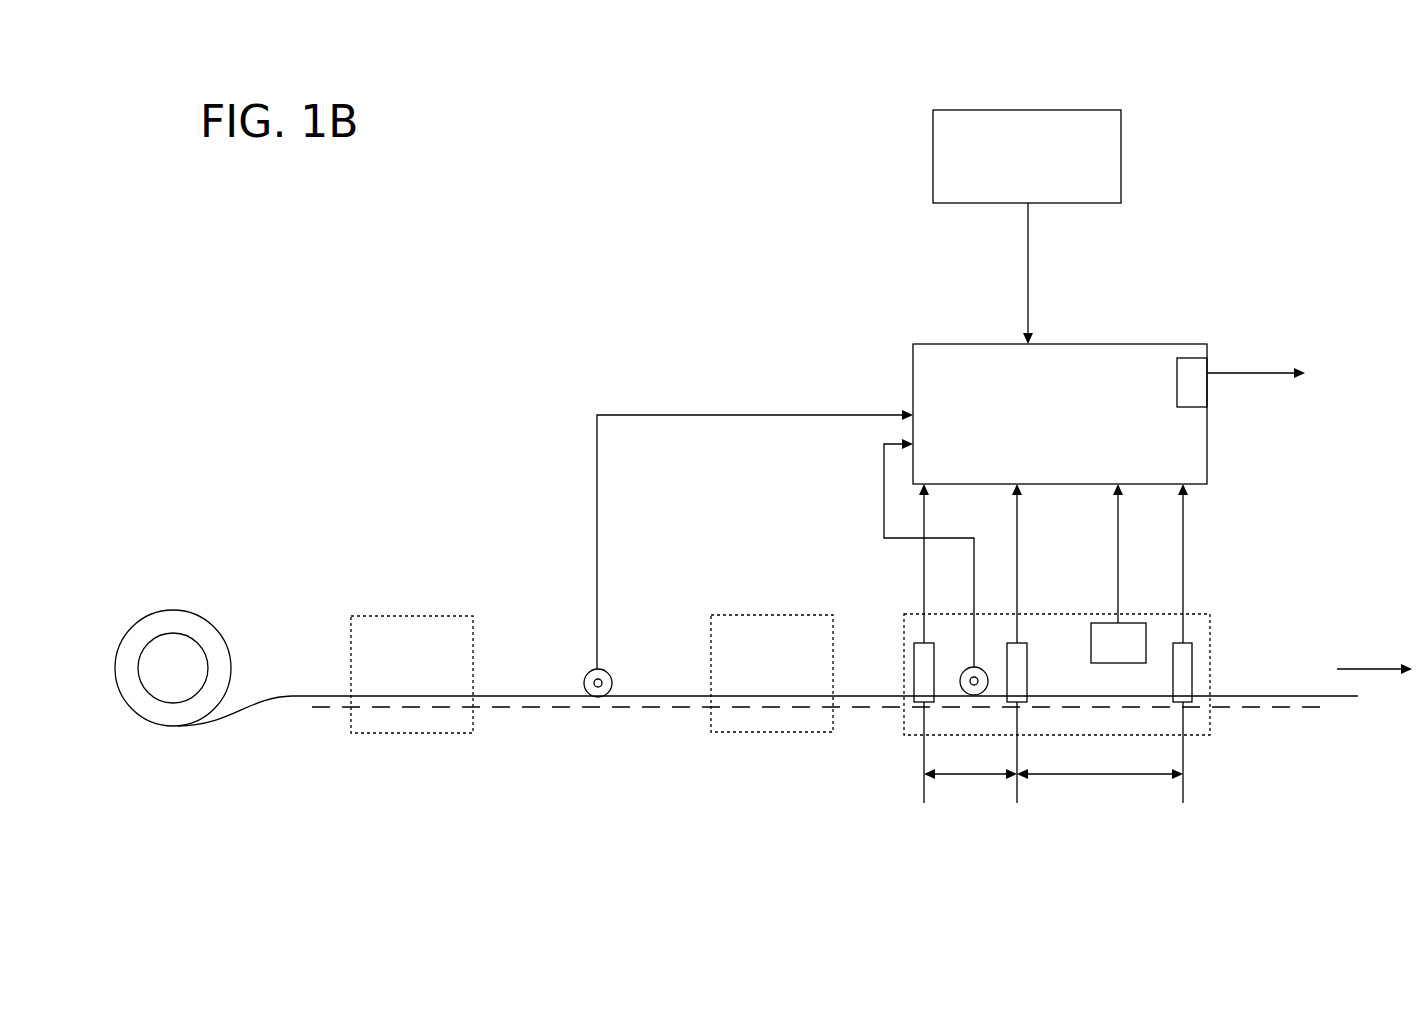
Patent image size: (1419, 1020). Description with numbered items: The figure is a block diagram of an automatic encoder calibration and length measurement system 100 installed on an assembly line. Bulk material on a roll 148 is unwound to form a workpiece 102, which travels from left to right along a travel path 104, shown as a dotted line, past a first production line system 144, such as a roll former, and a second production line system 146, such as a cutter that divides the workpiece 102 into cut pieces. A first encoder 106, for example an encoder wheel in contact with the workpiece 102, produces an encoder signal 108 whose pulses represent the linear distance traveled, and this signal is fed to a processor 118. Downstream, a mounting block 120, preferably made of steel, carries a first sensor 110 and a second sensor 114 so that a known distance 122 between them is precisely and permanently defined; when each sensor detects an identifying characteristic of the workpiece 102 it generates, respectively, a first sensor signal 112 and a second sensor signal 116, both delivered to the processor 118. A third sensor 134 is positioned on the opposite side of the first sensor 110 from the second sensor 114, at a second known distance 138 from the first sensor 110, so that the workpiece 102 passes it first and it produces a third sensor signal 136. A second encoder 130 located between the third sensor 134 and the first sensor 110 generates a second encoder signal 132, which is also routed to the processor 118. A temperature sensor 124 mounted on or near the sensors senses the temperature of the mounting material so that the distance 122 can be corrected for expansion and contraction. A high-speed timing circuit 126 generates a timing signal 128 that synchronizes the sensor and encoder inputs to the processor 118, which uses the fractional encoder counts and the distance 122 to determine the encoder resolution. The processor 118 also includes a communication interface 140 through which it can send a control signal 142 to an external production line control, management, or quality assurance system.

The automatic encoder calibration and length measurement system 100 is at (621, 147).
The workpiece 102 is at (272, 696).
The travel path 104 is at (319, 712).
The first encoder 106 is at (611, 672).
The encoder signal 108 is at (596, 524).
The first sensor 110 is at (1030, 661).
The first sensor signal 112 is at (1017, 515).
The second sensor 114 is at (1173, 672).
The second sensor signal 116 is at (1183, 567).
The processor 118 is at (1077, 342).
The mounting block 120 is at (905, 727).
The known distance 122 is at (1100, 778).
The temperature sensor 124 is at (1097, 623).
The high-speed timing circuit 126 is at (1122, 155).
The timing signal 128 is at (1028, 255).
The second encoder 130 is at (965, 668).
The second encoder signal 132 is at (884, 487).
The third sensor 134 is at (913, 670).
The third sensor signal 136 is at (924, 568).
The second known distance 138 is at (975, 778).
The communication interface 140 is at (1208, 395).
The control signal 142 is at (1247, 368).
The first production line system 144 is at (415, 615).
The second production line system 146 is at (772, 614).
The roll 148 is at (172, 610).